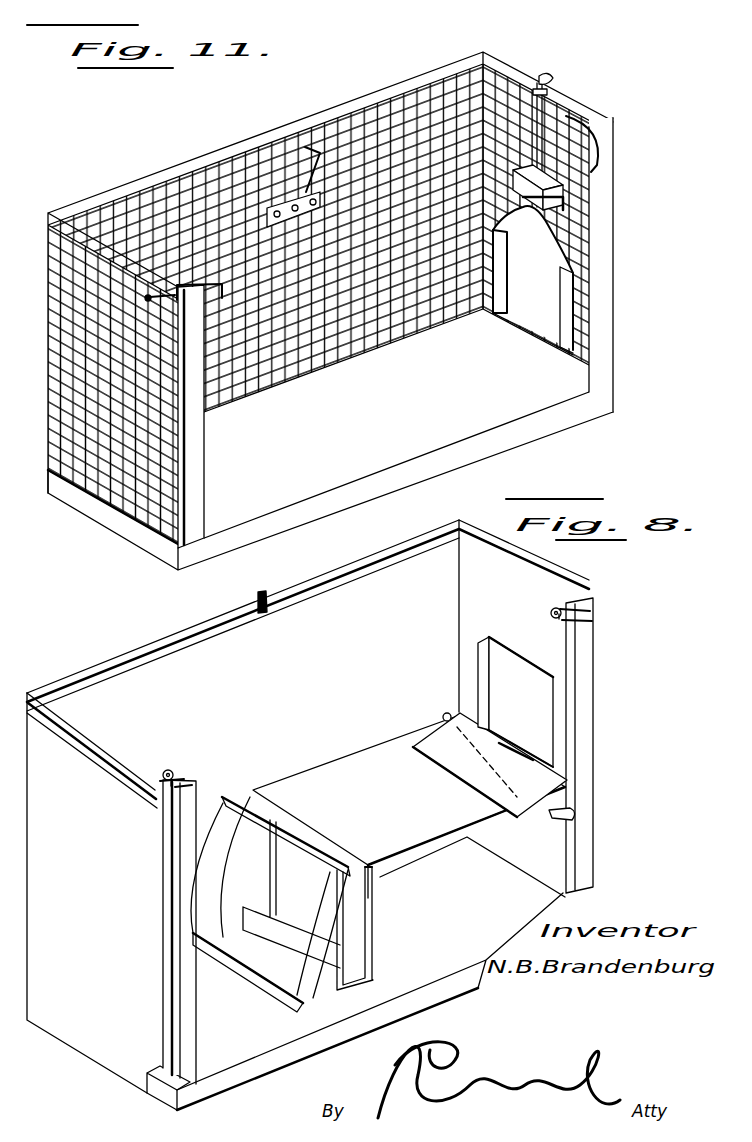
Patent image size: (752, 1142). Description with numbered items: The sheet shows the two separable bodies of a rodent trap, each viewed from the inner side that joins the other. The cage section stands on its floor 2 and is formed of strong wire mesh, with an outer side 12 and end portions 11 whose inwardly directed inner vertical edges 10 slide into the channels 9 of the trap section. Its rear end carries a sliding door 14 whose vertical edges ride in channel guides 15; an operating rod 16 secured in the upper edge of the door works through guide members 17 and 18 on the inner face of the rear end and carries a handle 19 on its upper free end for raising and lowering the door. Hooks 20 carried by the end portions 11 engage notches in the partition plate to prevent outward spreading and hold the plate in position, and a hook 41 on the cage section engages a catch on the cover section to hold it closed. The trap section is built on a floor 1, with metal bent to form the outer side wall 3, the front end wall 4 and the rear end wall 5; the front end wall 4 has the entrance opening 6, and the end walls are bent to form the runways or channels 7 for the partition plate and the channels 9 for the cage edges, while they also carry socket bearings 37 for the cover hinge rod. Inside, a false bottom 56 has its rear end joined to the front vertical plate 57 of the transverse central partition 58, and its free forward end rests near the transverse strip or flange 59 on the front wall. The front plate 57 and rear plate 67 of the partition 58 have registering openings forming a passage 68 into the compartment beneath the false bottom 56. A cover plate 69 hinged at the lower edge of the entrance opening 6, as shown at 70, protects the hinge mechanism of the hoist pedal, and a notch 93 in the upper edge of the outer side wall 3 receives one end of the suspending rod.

In FIG. 8, the floor of the trap section 1 is at (446, 1017).
In FIG. 11, the floor of the cage section 2 is at (549, 393).
In FIG. 8, the outer side wall 3 is at (341, 641).
In FIG. 8, the front end wall 4 is at (553, 583).
In FIG. 8, the rear end wall 5 is at (92, 764).
In FIG. 8, the entrance opening 6 is at (528, 700).
In FIG. 8, the runways or channels 7 is at (187, 780).
In FIG. 8, the channels 9 is at (167, 793).
In FIG. 11, the inner vertical edges 10 is at (599, 222).
In FIG. 11, the end portions of the cage section 11 is at (590, 118).
In FIG. 11, the outer side of the cage section 12 is at (376, 127).
In FIG. 11, the sliding door 14 is at (533, 280).
In FIG. 11, the channel guides 15 is at (568, 298).
In FIG. 11, the operating rod 16 is at (593, 138).
In FIG. 11, the guide member 17 is at (547, 93).
In FIG. 11, the guide member 18 is at (561, 200).
In FIG. 11, the handle 19 is at (556, 77).
In FIG. 11, the hooks 20 is at (210, 277).
In FIG. 8, the socket bearings 37 is at (173, 768).
In FIG. 11, the hook 41 is at (312, 150).
In FIG. 8, the false bottom 56 is at (455, 825).
In FIG. 8, the front vertical plate 57 is at (362, 897).
In FIG. 8, the transverse central partition 58 is at (378, 934).
In FIG. 8, the transverse strip or flange 59 is at (577, 822).
In FIG. 8, the rear plate 67 is at (290, 983).
In FIG. 8, the passage 68 is at (292, 877).
In FIG. 8, the cover plate 69 is at (519, 783).
In FIG. 8, the hinge of the cover plate 70 is at (529, 750).
In FIG. 8, the notch 93 is at (264, 591).